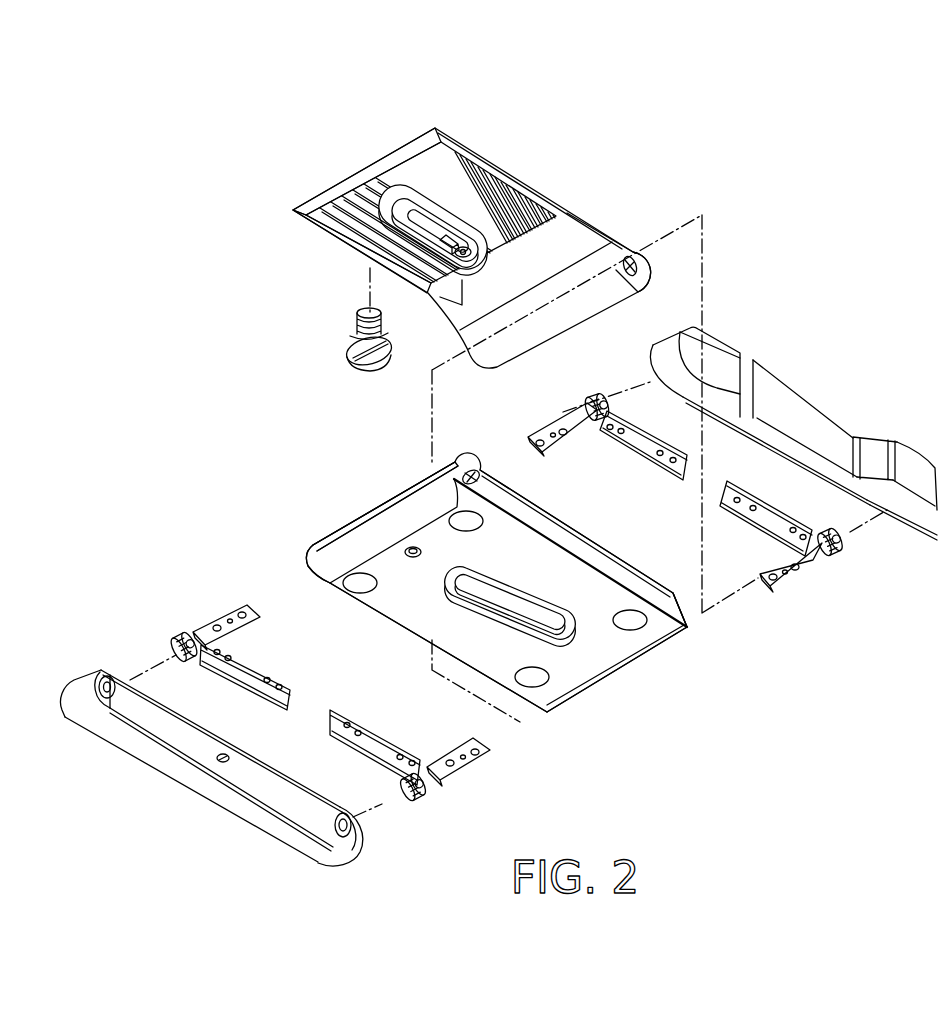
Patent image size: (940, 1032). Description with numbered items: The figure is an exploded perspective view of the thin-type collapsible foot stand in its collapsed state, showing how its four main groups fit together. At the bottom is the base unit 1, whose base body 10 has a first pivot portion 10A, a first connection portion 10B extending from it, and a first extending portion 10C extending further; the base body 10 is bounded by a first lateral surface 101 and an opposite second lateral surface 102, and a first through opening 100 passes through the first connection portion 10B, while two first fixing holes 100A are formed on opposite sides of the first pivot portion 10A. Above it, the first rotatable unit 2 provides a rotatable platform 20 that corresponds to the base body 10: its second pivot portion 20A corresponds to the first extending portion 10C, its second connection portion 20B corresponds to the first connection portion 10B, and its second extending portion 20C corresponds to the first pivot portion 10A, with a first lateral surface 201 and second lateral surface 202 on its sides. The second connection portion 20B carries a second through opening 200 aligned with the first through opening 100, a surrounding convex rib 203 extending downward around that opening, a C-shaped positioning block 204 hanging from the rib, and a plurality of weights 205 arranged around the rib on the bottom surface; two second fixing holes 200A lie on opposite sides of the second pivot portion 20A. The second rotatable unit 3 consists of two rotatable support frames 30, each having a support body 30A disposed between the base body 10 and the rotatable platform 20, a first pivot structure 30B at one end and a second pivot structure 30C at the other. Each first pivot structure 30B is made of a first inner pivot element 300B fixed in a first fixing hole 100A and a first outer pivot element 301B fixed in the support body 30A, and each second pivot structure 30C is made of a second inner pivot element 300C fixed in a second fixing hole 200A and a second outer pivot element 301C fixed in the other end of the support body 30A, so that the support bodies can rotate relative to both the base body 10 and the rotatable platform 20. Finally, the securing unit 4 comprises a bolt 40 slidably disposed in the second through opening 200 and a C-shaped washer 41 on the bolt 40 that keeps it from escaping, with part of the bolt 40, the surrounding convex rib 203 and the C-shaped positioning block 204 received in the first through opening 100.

The base unit 1 is at (697, 756).
The base body 10 is at (705, 701).
The first pivot portion 10A is at (487, 482).
The first connection portion 10B is at (547, 527).
The first extending portion 10C is at (667, 627).
The first through opening 100 is at (502, 605).
The first fixing holes 100A is at (480, 460).
The first lateral surface 101 is at (593, 560).
The second lateral surface 102 is at (380, 615).
The first rotatable unit 2 is at (597, 83).
The rotatable platform 20 is at (648, 160).
The second pivot portion 20A is at (627, 248).
The second connection portion 20B is at (540, 193).
The second extending portion 20C is at (445, 140).
The second through opening 200 is at (425, 248).
The second fixing holes 200A is at (638, 290).
The first lateral surface 201 is at (607, 238).
The second lateral surface 202 is at (350, 221).
The surrounding convex rib 203 is at (395, 193).
The C-shaped positioning block 204 is at (468, 258).
The weights 205 is at (348, 225).
The second rotatable unit 3 is at (103, 853).
The rotatable support frame 30 is at (195, 868).
The support body 30A is at (820, 432).
The first pivot structure 30B is at (767, 286).
The second pivot structure 30C is at (880, 620).
The first inner pivot element 300B is at (602, 378).
The first outer pivot element 301B is at (647, 437).
The second inner pivot element 300C is at (787, 583).
The second outer pivot element 301C is at (803, 562).
The securing unit 4 is at (424, 405).
The bolt 40 is at (372, 365).
The C-shaped washer 41 is at (383, 330).